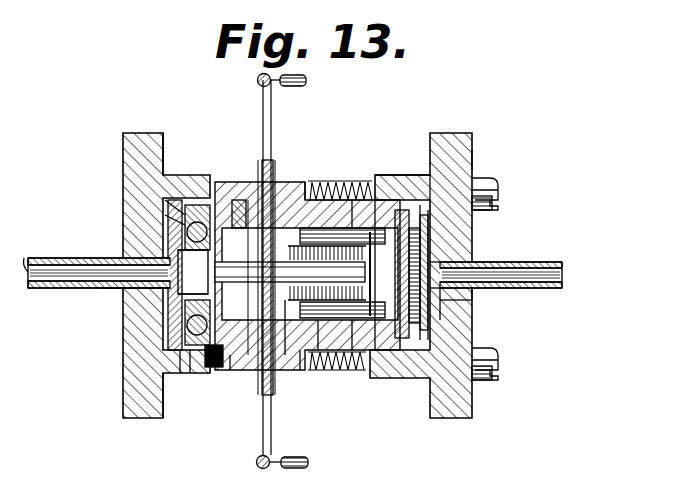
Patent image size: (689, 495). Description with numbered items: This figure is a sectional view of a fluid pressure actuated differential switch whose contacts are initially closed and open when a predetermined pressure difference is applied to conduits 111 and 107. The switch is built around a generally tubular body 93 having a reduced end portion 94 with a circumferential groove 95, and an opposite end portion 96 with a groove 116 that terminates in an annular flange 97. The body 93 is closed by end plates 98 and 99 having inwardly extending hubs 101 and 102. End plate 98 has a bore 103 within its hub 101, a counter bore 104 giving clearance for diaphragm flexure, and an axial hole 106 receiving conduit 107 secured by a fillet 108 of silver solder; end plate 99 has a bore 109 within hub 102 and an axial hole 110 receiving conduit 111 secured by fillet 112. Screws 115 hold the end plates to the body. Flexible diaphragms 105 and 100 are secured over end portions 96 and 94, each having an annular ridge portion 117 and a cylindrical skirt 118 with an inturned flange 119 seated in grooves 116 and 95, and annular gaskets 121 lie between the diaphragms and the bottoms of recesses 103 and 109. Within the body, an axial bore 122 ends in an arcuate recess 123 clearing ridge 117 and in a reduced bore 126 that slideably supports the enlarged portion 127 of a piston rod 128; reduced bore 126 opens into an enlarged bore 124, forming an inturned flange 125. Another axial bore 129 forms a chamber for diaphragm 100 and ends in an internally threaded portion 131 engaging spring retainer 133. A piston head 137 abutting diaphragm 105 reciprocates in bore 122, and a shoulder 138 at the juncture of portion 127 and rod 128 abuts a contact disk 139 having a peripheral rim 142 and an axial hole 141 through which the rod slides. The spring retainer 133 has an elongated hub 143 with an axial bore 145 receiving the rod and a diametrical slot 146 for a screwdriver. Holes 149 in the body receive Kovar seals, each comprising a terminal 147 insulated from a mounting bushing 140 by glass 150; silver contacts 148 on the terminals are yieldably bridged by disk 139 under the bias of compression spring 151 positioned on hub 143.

The tubular body 93 is at (285, 182).
The reduced end portion 94 is at (338, 182).
The circumferential groove 95 is at (376, 200).
The opposite end portion 96 is at (198, 373).
The annular flange 97 is at (190, 373).
The end plate 98 is at (488, 110).
The end plate 99 is at (128, 133).
The flexible diaphragm 100 is at (462, 252).
The hub 101 is at (405, 175).
The hub 102 is at (168, 150).
The bore 103 is at (440, 185).
The counter bore 104 is at (448, 316).
The flexible diaphragm 105 is at (180, 310).
The axial hole 106 is at (450, 262).
The conduit 107 is at (572, 250).
The fillet 108 is at (460, 292).
The bore 109 is at (184, 200).
The axial hole 110 is at (138, 258).
The conduit 111 is at (40, 253).
The fillet 112 is at (118, 290).
The screws 115 is at (498, 186).
The groove 116 is at (172, 205).
The annular ridge portion 117 is at (400, 212).
The cylindrical skirt 118 is at (414, 340).
The inturned flange 119 is at (394, 340).
The annular gaskets 121 is at (430, 175).
The axial bore 122 is at (213, 367).
The arcuate recess 123 is at (178, 215).
The enlarged axial bore 124 is at (320, 350).
The inturned flange 125 is at (238, 200).
The reduced bore 126 is at (193, 281).
The enlarged portion 127 is at (230, 372).
The piston rod 128 is at (305, 228).
The axial bore 129 is at (428, 350).
The internally threaded portion 131 is at (440, 244).
The spring retainer 133 is at (368, 302).
The piston head 137 is at (193, 259).
The shoulder 138 is at (286, 355).
The contact disk 139 is at (303, 182).
The mounting bushing 140 is at (248, 355).
The axial hole 141 is at (270, 270).
The peripheral rim 142 is at (301, 370).
The elongated hub 143 is at (352, 200).
The axial bore 145 is at (355, 372).
The diametrical slot 146 is at (480, 306).
The terminal 147 is at (260, 78).
The contacts 148 is at (262, 200).
The holes 149 is at (276, 395).
The glass 150 is at (258, 160).
The compression spring 151 is at (320, 300).